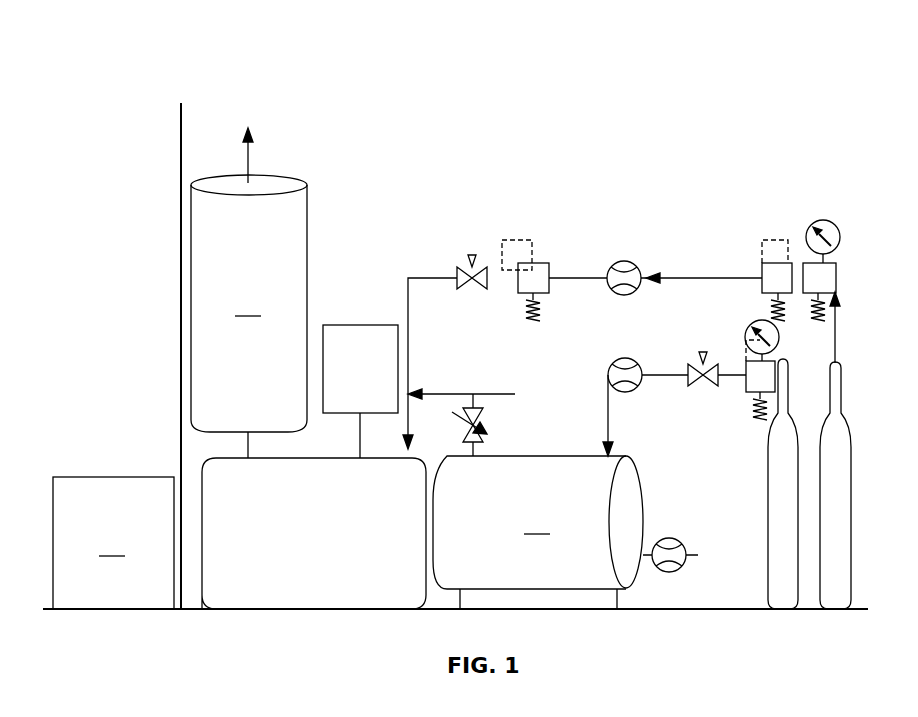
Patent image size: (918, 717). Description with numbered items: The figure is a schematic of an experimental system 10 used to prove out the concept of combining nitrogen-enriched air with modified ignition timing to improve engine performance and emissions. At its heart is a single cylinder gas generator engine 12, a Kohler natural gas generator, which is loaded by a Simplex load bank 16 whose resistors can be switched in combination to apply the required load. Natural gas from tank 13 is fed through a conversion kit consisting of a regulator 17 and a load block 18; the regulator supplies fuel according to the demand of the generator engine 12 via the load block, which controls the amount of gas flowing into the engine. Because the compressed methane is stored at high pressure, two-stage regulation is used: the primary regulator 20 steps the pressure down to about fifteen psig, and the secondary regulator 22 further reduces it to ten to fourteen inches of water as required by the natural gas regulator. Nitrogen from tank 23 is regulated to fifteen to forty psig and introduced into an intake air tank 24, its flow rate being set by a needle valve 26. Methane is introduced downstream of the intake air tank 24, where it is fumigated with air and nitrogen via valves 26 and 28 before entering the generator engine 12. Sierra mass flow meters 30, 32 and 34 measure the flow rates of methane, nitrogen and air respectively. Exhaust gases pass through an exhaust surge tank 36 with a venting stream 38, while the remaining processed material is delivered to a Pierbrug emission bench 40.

The experimental system 10 is at (112, 58).
The gas generator engine 12 is at (220, 590).
The tank 13 is at (843, 486).
The load bank 16 is at (360, 338).
The regulator 17 is at (468, 266).
The load block 18 is at (537, 266).
The primary regulator 20 is at (822, 272).
The secondary regulator 22 is at (772, 268).
The tank 23 is at (778, 578).
The intake air tank 24 is at (538, 532).
The needle valve 26 is at (698, 368).
The valve 28 is at (490, 437).
The mass flow meter 30 is at (622, 262).
The mass flow meter 32 is at (620, 358).
The mass flow meter 34 is at (670, 540).
The exhaust surge tank 36 is at (249, 316).
The venting stream 38 is at (255, 155).
The emission bench 40 is at (181, 305).